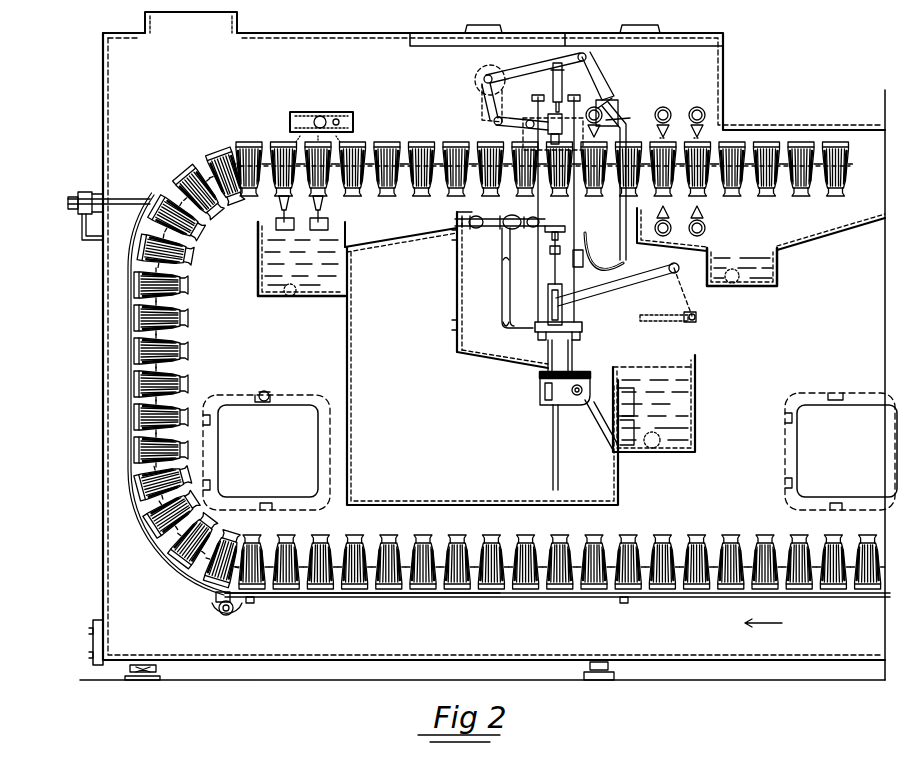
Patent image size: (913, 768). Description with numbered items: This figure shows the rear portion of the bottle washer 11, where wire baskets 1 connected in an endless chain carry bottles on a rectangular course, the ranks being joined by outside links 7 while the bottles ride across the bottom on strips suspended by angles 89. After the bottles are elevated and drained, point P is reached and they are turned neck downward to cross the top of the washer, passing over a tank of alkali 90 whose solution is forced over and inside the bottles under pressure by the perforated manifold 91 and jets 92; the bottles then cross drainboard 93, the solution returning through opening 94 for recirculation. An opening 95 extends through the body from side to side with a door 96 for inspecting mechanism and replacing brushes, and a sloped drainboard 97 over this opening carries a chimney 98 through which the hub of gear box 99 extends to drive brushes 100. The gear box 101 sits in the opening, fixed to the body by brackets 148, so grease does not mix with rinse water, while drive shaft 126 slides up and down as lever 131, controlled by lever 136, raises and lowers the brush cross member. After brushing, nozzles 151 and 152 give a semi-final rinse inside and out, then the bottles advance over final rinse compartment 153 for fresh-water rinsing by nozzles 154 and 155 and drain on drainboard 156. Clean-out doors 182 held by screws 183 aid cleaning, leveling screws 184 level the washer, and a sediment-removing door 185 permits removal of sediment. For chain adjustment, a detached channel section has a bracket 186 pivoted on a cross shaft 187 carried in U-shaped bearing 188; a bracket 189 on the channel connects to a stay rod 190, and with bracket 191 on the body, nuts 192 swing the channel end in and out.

The washer 11 is at (296, 33).
The wire baskets 1 is at (880, 566).
The point P is at (213, 140).
The outside links 7 is at (476, 594).
The angles 89 is at (252, 598).
The bracket 189 is at (138, 195).
The stay rod 190 is at (110, 200).
The nuts 192 is at (70, 201).
The bracket 191 is at (82, 222).
The perforated manifold 91 is at (350, 112).
The jets 92 is at (285, 205).
The tank of alkali 90 is at (276, 298).
The opening 94 is at (292, 296).
The drainboard 93 is at (388, 240).
The opening 95 is at (482, 376).
The door 96 is at (455, 312).
The drainboard 97 is at (478, 358).
The brushes 100 is at (538, 238).
The chimney 98 is at (540, 356).
The gear box 99 is at (552, 375).
The gear box 101 is at (555, 400).
The drive shaft 126 is at (552, 452).
The brackets 148 is at (604, 432).
The nozzles 151 is at (590, 280).
The lever 131 is at (636, 280).
The lever 136 is at (692, 312).
The nozzles 152 is at (604, 148).
The nozzles 155 is at (695, 110).
The nozzles 154 is at (700, 228).
The final rinse compartment 153 is at (728, 272).
The drainboard 156 is at (812, 245).
The clean-out doors 182 is at (292, 400).
The screws 183 is at (262, 396).
The bracket 186 is at (218, 597).
The cross shaft 187 is at (222, 608).
The U-shaped bearing 188 is at (233, 615).
The sediment-removing door 185 is at (92, 640).
The leveling screws 184 is at (150, 672).